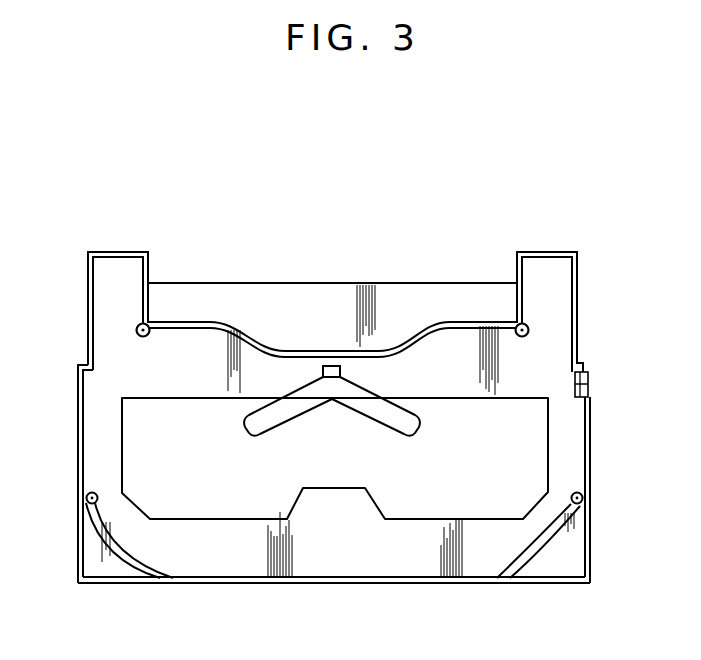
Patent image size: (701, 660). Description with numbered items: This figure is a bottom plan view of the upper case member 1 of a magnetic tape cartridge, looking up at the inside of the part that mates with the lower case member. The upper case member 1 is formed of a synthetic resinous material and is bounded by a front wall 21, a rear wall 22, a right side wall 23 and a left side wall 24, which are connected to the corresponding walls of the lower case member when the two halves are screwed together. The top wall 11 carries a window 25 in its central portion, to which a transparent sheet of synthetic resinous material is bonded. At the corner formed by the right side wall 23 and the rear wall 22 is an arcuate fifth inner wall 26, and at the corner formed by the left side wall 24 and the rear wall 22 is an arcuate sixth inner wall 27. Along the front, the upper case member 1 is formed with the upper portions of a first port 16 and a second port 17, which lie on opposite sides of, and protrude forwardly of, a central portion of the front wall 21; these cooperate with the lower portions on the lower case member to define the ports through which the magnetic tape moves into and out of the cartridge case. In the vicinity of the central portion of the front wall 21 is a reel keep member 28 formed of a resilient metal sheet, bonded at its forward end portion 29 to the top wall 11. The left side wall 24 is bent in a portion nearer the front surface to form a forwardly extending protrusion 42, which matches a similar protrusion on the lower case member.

The upper case member 1 is at (339, 283).
The top wall 11 is at (435, 568).
The first port 16 is at (550, 258).
The second port 17 is at (128, 260).
The front wall 21 is at (318, 350).
The rear wall 22 is at (328, 580).
The right side wall 23 is at (78, 445).
The left side wall 24 is at (590, 444).
The window 25 is at (186, 404).
The arcuate fifth inner wall 26 is at (128, 547).
The arcuate sixth inner wall 27 is at (533, 546).
The reel keep member 28 is at (295, 409).
The forward end portion 29 is at (340, 371).
The protrusion 42 is at (588, 381).